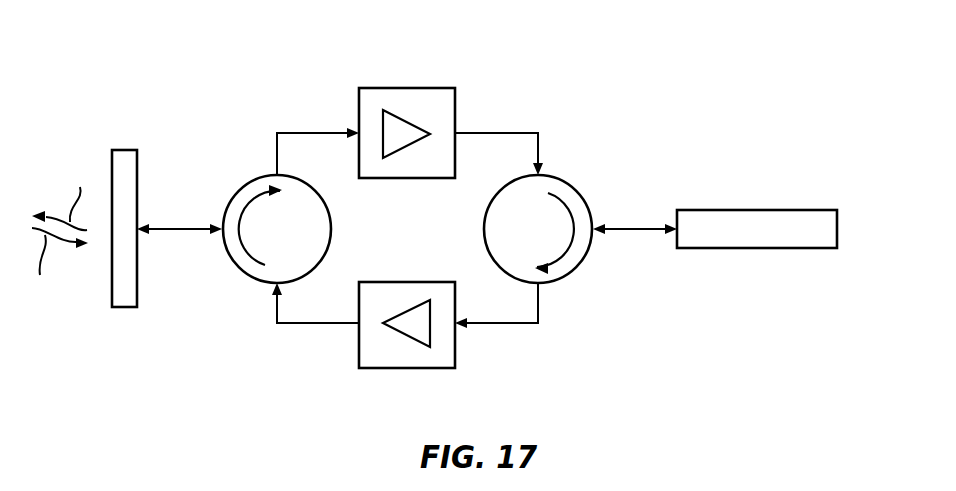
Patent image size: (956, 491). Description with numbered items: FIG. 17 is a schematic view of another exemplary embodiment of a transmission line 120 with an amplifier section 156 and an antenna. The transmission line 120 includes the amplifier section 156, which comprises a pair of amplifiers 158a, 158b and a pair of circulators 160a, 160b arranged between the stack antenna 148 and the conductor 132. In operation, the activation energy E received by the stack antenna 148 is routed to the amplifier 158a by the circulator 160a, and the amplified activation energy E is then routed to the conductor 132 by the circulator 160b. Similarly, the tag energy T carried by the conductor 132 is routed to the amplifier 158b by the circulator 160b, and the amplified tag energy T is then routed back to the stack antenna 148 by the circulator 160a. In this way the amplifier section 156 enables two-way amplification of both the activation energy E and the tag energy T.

The transmission line 120 is at (642, 86).
The conductor 132 is at (837, 229).
The stack antenna 148 is at (125, 150).
The amplifier section 156 is at (381, 67).
The amplifier 158a is at (407, 88).
The amplifier 158b is at (407, 368).
The circulator 160a is at (263, 177).
The circulator 160b is at (565, 177).